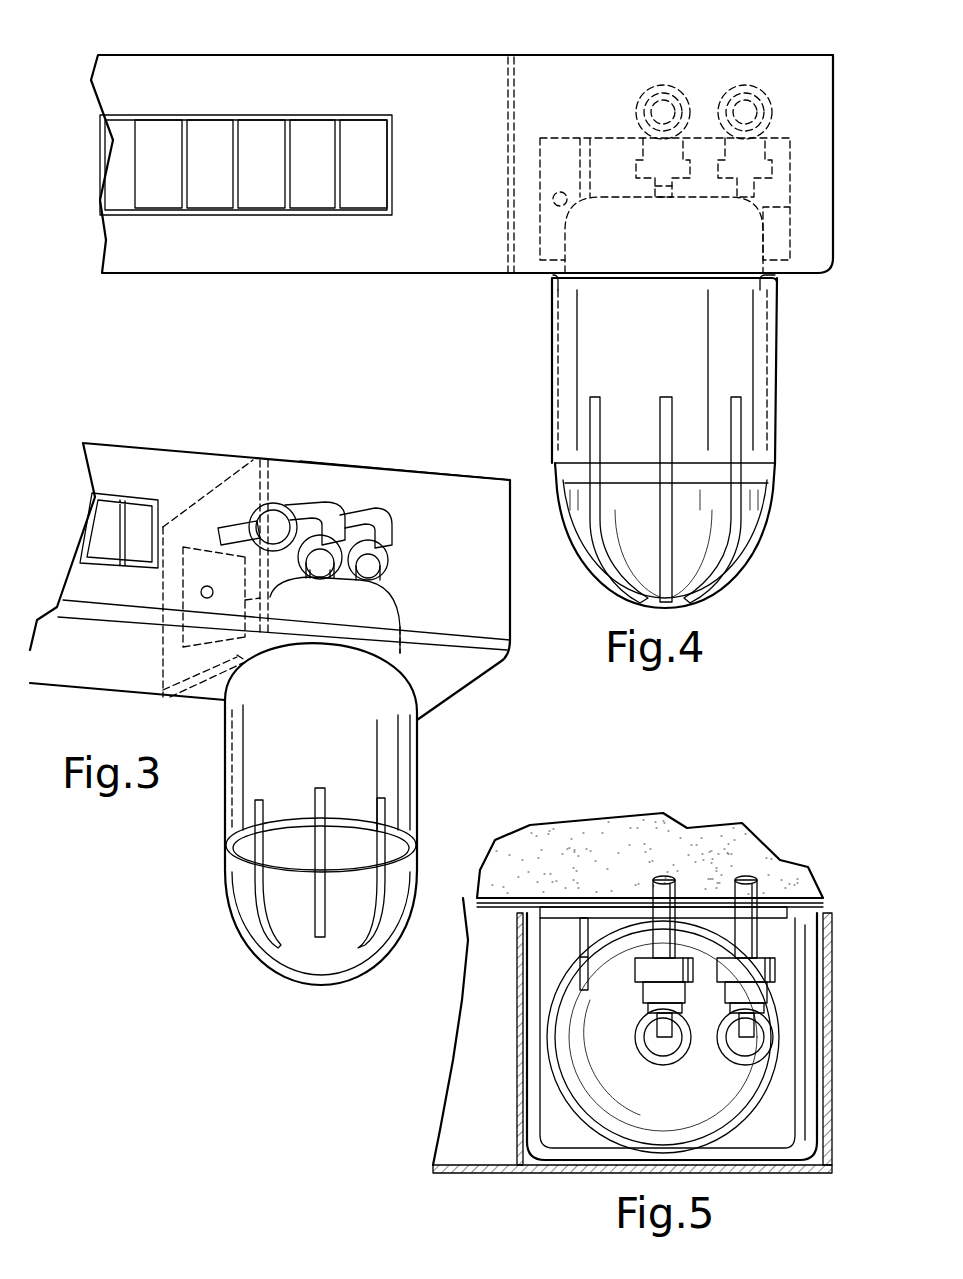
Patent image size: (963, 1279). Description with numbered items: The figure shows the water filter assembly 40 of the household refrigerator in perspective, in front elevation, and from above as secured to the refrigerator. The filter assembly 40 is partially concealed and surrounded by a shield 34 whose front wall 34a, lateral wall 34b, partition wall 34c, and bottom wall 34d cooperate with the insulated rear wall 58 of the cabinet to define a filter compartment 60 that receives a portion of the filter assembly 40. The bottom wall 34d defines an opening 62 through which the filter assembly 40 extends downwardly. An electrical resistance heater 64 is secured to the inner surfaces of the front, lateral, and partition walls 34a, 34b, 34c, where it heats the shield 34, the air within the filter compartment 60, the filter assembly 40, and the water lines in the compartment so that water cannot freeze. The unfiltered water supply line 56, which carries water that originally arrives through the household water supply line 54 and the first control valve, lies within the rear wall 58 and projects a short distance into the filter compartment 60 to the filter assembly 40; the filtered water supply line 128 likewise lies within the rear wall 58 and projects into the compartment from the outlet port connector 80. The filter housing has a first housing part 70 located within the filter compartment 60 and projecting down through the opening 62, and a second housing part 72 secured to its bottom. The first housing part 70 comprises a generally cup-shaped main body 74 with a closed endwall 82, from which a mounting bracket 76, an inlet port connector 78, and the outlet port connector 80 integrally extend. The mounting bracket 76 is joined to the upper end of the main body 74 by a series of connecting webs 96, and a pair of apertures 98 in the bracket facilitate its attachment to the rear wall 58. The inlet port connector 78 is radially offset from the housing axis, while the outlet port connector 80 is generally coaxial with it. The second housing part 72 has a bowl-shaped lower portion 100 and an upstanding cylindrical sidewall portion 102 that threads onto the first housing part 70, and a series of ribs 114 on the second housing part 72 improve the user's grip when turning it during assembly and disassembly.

In FIG. 4, the shield 34 is at (418, 65).
In FIG. 3, the shield 34 is at (113, 458).
In FIG. 4, the front wall 34a is at (640, 65).
In FIG. 3, the front wall 34a is at (477, 485).
In FIG. 4, the lateral wall 34b is at (833, 118).
In FIG. 5, the lateral wall 34b is at (835, 993).
In FIG. 4, the partition wall 34c is at (508, 122).
In FIG. 3, the partition wall 34c is at (257, 485).
In FIG. 5, the partition wall 34c is at (518, 1118).
In FIG. 3, the bottom wall 34d is at (197, 690).
In FIG. 5, the bottom wall 34d is at (540, 1090).
In FIG. 4, the water filter assembly 40 is at (758, 578).
In FIG. 3, the water filter assembly 40 is at (232, 957).
In FIG. 5, the water filter assembly 40 is at (568, 1125).
In FIG. 3, the household water supply line 54 is at (320, 575).
In FIG. 3, the unfiltered water supply line 56 is at (333, 510).
In FIG. 5, the unfiltered water supply line 56 is at (758, 893).
In FIG. 5, the rear wall 58 is at (500, 910).
In FIG. 4, the filter compartment 60 is at (782, 310).
In FIG. 3, the filter compartment 60 is at (422, 745).
In FIG. 5, the filter compartment 60 is at (797, 1060).
In FIG. 4, the opening 62 is at (805, 291).
In FIG. 5, the electrical resistance heater 64 is at (540, 1012).
In FIG. 4, the first housing part 70 is at (580, 256).
In FIG. 3, the first housing part 70 is at (367, 603).
In FIG. 4, the second housing part 72 is at (553, 362).
In FIG. 3, the second housing part 72 is at (225, 808).
In FIG. 4, the main body 74 is at (752, 240).
In FIG. 4, the mounting bracket 76 is at (778, 145).
In FIG. 3, the mounting bracket 76 is at (237, 657).
In FIG. 5, the mounting bracket 76 is at (777, 918).
In FIG. 4, the inlet port connector 78 is at (748, 192).
In FIG. 3, the inlet port connector 78 is at (375, 578).
In FIG. 4, the outlet port connector 80 is at (655, 190).
In FIG. 5, the endwall 82 is at (703, 1085).
In FIG. 5, the connecting webs 96 is at (577, 945).
In FIG. 3, the apertures 98 is at (207, 586).
In FIG. 4, the bowl-shaped lower portion 100 is at (622, 600).
In FIG. 3, the bowl-shaped lower portion 100 is at (312, 975).
In FIG. 4, the cylindrical sidewall portion 102 is at (720, 360).
In FIG. 3, the cylindrical sidewall portion 102 is at (388, 775).
In FIG. 5, the cylindrical sidewall portion 102 is at (765, 1083).
In FIG. 4, the ribs 114 is at (775, 508).
In FIG. 3, the ribs 114 is at (323, 900).
In FIG. 3, the filtered water supply line 128 is at (245, 525).
In FIG. 5, the filtered water supply line 128 is at (650, 898).